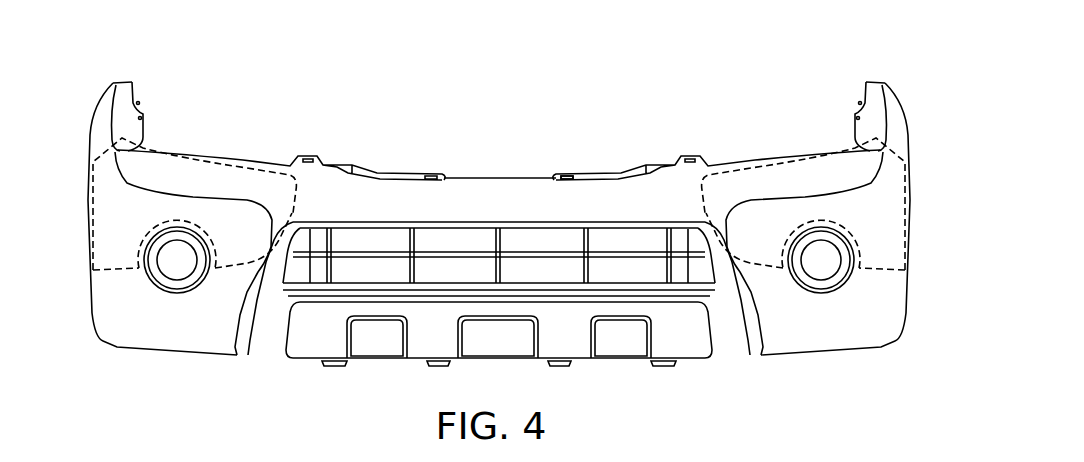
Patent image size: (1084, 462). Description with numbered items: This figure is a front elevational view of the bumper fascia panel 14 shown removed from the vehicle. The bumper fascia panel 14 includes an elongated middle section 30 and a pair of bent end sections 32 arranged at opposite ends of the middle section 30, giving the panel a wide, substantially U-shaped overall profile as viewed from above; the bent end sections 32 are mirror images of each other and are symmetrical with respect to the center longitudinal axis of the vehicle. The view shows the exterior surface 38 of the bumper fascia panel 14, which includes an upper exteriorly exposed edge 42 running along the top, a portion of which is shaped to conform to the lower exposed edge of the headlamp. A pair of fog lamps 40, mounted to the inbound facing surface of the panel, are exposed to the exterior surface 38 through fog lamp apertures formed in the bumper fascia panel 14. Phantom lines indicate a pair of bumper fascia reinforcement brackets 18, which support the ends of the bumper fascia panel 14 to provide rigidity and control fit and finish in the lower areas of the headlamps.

The bumper fascia panel 14 is at (409, 96).
The bumper fascia reinforcement bracket 18 is at (181, 174).
The middle section 30 is at (478, 205).
The bent end section 32 is at (98, 110).
The exterior surface 38 is at (575, 200).
The fog lamp 40 is at (178, 268).
The upper exteriorly exposed edge 42 is at (242, 160).